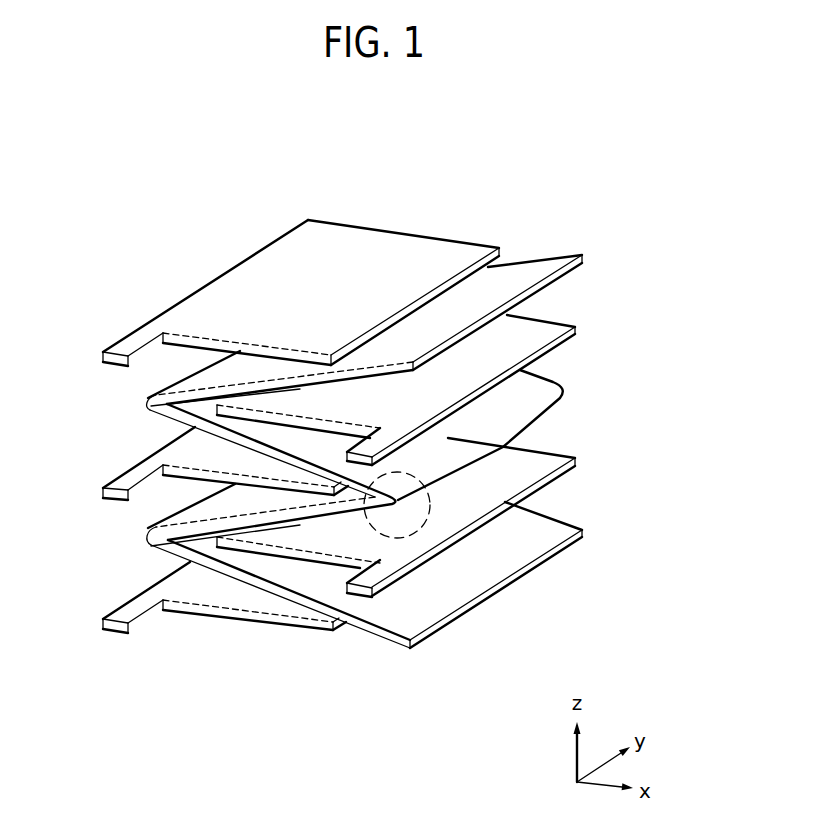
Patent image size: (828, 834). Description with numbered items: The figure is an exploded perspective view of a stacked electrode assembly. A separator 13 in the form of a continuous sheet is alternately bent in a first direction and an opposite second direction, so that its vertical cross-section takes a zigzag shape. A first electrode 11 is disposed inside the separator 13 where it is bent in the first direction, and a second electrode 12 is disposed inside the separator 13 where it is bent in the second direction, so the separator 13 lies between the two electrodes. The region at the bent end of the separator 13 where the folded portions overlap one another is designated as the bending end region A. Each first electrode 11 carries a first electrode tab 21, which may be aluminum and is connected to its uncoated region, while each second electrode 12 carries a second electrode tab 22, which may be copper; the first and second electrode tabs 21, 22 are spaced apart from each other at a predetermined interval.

The first electrode 11 is at (596, 328).
The second electrode 12 is at (203, 278).
The separator 13 is at (546, 262).
The first electrode tab 21 is at (376, 448).
The second electrode tab 22 is at (125, 348).
The bending end region A is at (430, 518).